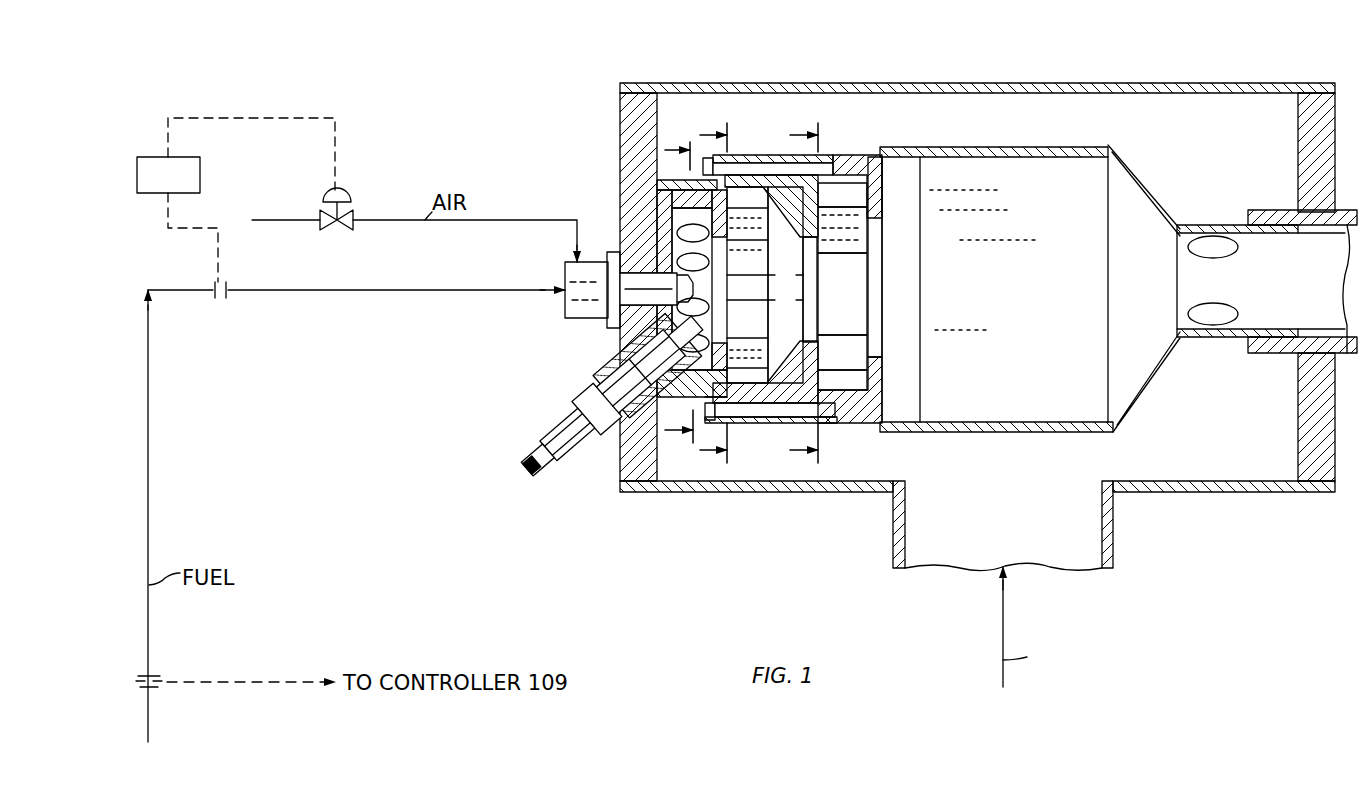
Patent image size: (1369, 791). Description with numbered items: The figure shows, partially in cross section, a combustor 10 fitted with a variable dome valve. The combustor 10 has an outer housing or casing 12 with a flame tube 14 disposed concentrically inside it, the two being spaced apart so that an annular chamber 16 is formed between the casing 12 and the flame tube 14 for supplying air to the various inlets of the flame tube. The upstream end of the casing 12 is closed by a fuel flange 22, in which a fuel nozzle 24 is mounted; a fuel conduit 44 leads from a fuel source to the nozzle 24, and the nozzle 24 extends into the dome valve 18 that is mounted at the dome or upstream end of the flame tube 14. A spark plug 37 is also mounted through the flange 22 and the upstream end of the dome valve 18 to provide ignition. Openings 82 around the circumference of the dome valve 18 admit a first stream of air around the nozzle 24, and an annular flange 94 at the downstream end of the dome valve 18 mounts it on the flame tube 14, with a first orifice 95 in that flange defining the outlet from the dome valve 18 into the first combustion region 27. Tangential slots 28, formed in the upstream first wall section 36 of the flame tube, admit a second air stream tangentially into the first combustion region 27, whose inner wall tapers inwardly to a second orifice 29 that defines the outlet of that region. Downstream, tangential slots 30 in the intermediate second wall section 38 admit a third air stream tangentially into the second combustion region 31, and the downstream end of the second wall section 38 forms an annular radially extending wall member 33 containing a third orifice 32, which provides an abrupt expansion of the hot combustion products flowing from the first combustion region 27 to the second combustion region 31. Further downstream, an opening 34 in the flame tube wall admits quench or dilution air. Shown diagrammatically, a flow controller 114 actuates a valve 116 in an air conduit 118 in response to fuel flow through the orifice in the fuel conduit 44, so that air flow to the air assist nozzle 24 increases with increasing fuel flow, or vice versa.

The combustor 10 is at (877, 66).
The outer housing or casing 12 is at (1053, 83).
The flame tube 14 is at (1026, 147).
The annular chamber 16 is at (1127, 125).
The dome valve 18 is at (660, 174).
The fuel flange 22 is at (620, 132).
The fuel nozzle 24 is at (597, 318).
The first combustion region 27 is at (799, 297).
The tangential slots 28 is at (758, 265).
The second orifice 29 is at (817, 298).
The tangential slots 30 is at (852, 360).
The second combustion region 31 is at (948, 326).
The third orifice 32 is at (872, 358).
The annular radially extending wall member 33 is at (880, 216).
The opening 34 is at (1190, 252).
The first wall section 36 is at (775, 175).
The spark plug 37 is at (556, 470).
The second wall section 38 is at (838, 155).
The fuel conduit 44 is at (275, 292).
The openings 82 is at (708, 268).
The annular flange 94 is at (722, 412).
The first orifice 95 is at (712, 312).
The flow controller 114 is at (137, 175).
The valve 116 is at (333, 232).
The air conduit 118 is at (440, 222).